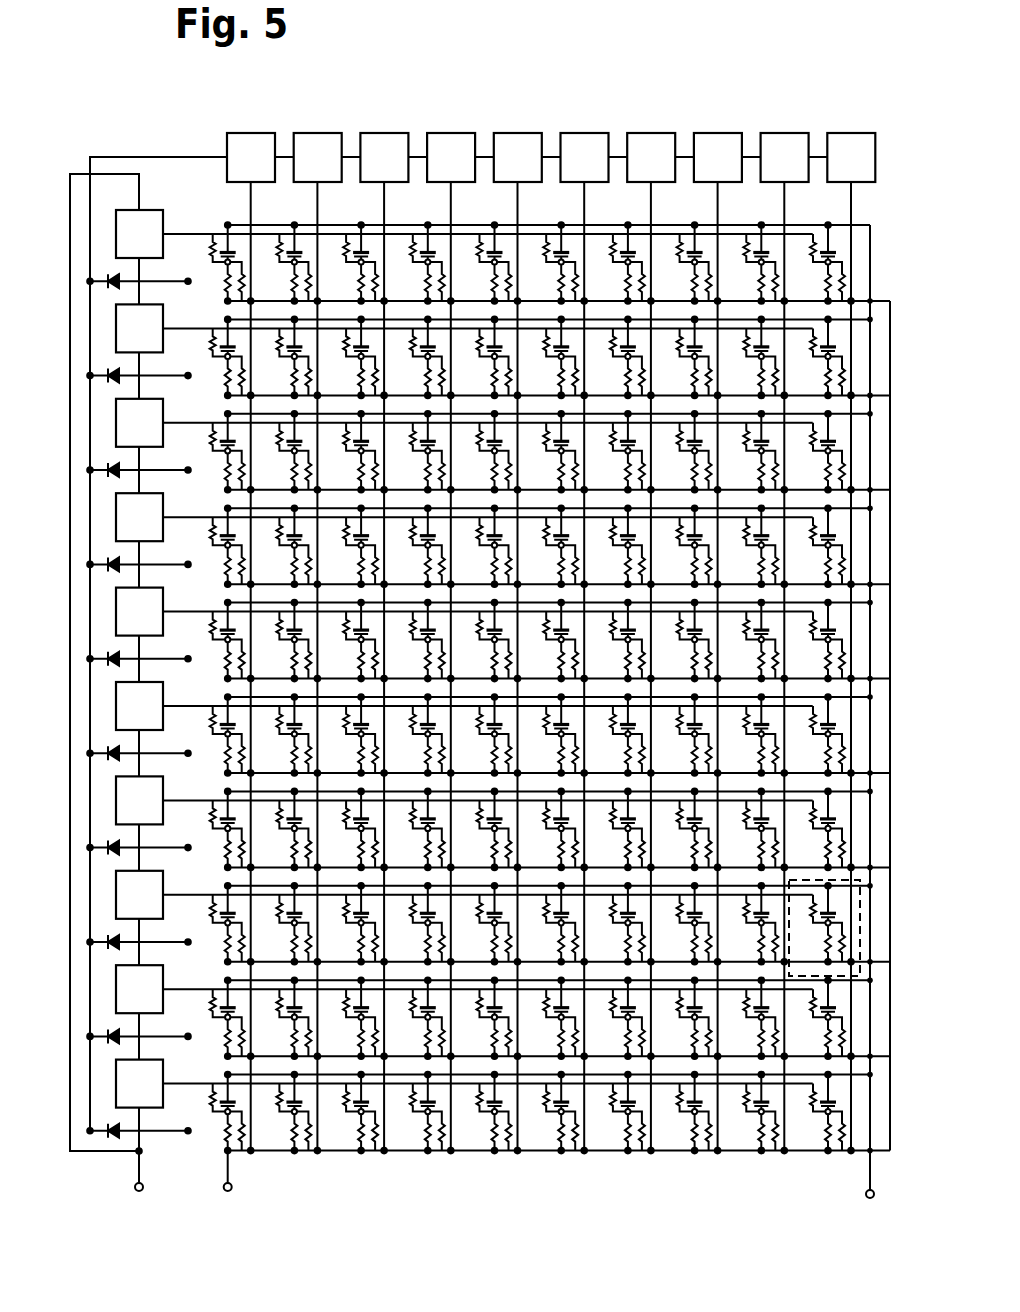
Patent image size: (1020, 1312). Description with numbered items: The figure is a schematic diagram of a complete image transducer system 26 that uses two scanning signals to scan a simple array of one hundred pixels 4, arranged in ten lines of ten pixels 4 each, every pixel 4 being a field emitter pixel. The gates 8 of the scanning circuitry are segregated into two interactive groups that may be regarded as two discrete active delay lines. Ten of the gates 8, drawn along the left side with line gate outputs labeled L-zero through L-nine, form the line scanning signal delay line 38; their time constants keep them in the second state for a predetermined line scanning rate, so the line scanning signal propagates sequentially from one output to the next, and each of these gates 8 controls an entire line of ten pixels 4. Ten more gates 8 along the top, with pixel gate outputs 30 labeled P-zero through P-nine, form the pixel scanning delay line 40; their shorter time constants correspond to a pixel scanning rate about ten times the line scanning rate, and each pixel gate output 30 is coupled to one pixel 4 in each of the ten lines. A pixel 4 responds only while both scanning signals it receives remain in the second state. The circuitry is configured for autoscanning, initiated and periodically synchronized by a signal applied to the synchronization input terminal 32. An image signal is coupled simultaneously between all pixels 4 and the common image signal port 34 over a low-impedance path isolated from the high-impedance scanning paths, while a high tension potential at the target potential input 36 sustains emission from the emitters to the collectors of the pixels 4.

The gate 8 is at (248, 132).
The pixel scanning delay line 40 is at (453, 131).
The image transducer system 26 is at (727, 97).
The pixel gate output 30 is at (853, 208).
The line scanning signal delay line 38 is at (115, 607).
The pixel 4 is at (860, 905).
The synchronization input terminal 32 is at (143, 1188).
The common image signal port 34 is at (230, 1193).
The target potential input 36 is at (868, 1198).